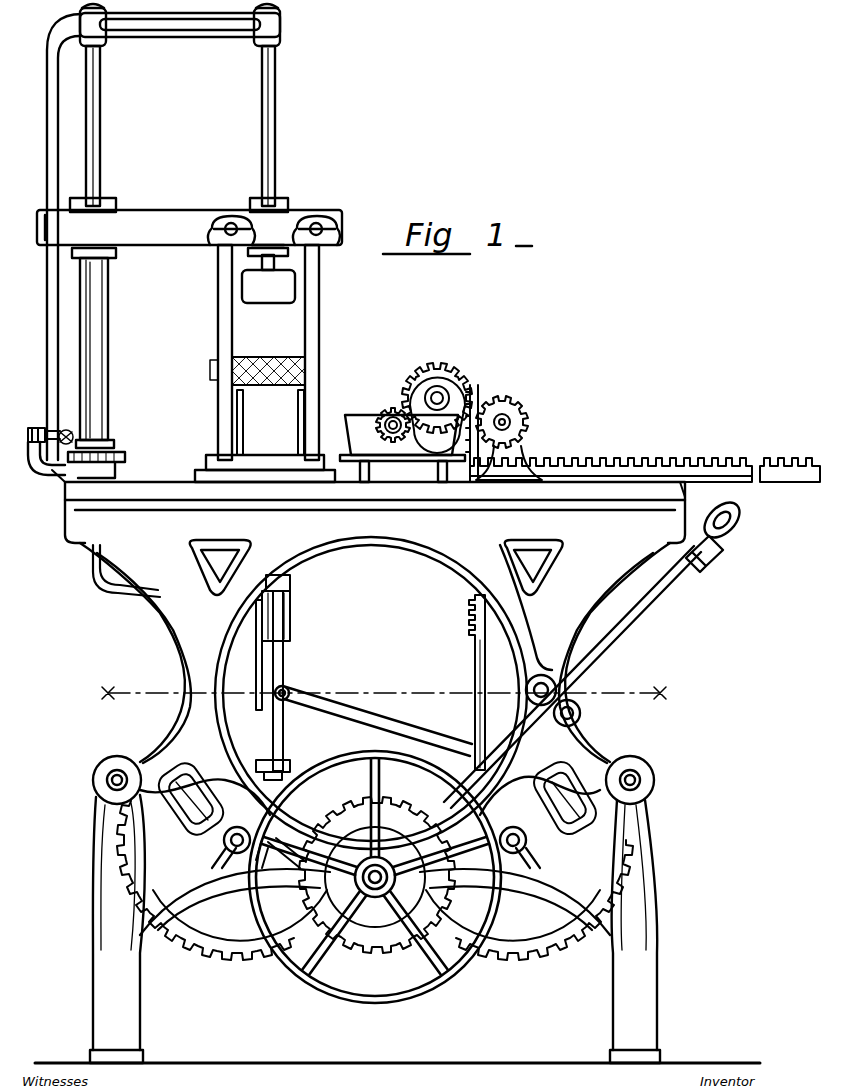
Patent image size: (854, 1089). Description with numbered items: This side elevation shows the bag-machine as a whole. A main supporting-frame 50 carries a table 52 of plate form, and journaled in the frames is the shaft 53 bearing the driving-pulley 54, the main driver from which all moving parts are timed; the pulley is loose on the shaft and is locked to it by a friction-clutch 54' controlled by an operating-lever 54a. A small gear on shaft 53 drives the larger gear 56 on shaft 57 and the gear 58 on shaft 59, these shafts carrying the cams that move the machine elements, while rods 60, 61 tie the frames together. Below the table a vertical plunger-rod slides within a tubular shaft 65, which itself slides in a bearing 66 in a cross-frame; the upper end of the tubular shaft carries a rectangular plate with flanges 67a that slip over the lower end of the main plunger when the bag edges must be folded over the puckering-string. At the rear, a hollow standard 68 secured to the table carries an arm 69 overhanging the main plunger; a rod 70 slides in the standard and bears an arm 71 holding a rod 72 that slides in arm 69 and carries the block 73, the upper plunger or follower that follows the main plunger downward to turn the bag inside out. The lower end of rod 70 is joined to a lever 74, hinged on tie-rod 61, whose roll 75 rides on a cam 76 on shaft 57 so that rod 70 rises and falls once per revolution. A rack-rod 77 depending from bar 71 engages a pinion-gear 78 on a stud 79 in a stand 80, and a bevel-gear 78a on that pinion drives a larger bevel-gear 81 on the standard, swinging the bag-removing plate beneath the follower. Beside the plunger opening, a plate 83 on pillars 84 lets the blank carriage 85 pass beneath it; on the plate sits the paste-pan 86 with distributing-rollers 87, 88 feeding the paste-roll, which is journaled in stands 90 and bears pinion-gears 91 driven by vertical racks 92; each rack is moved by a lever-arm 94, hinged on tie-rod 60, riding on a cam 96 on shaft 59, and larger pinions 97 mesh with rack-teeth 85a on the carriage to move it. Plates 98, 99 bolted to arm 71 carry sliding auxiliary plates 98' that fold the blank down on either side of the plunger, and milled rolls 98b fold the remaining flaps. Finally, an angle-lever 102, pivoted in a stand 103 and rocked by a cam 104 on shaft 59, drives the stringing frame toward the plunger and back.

The main supporting-frame 50 is at (375, 512).
The table 52 is at (688, 488).
The shaft 53 is at (377, 898).
The driving-pulley 54 is at (375, 894).
The friction-clutch 54' is at (375, 906).
The operating-lever 54a is at (640, 614).
The larger gear 56 is at (529, 915).
The shaft 57 is at (526, 841).
The gear 58 is at (230, 946).
The shaft 59 is at (224, 841).
The tie-rod 60 is at (112, 780).
The tie-rod 61 is at (640, 780).
The tubular shaft 65 is at (284, 670).
The bearing 66 is at (292, 616).
The upwardly-extending flanges 67a is at (292, 582).
The hollow standard 68 is at (96, 376).
The arm 69 is at (189, 227).
The rod 70 is at (100, 122).
The arm 71 is at (190, 32).
The rod 72 is at (276, 78).
The upper plunger or follower 73 is at (268, 274).
The lever 74 is at (364, 716).
The roll 75 is at (515, 891).
The cam 76 is at (140, 594).
The rack-rod 77 is at (50, 100).
The pinion-gear 78 is at (44, 426).
The bevel-gear 78a is at (67, 428).
The short stud 79 is at (32, 472).
The stand 80 is at (60, 484).
The larger bevel-gear 81 is at (114, 442).
The plate 83 is at (362, 440).
The pillars 84 is at (440, 470).
The carriage 85 is at (613, 478).
The rack-teeth 85a is at (652, 470).
The paste-pan 86 is at (437, 416).
The distributing-roller 87 is at (390, 408).
The distributing-roller 88 is at (437, 364).
The stands 90 is at (508, 456).
The pinion-gears 91 is at (522, 412).
The vertical racks 92 is at (474, 632).
The lever-arm 94 is at (191, 798).
The cam 96 is at (281, 867).
The pinion gears 97 is at (522, 394).
The vertically-depending plate 98 is at (257, 363).
The auxiliary plates 98' is at (284, 405).
The milled rolls 98b is at (268, 358).
The vertically-depending plate 99 is at (318, 320).
The angle-lever 102 is at (266, 652).
The stand 103 is at (240, 768).
The cam 104 is at (235, 891).